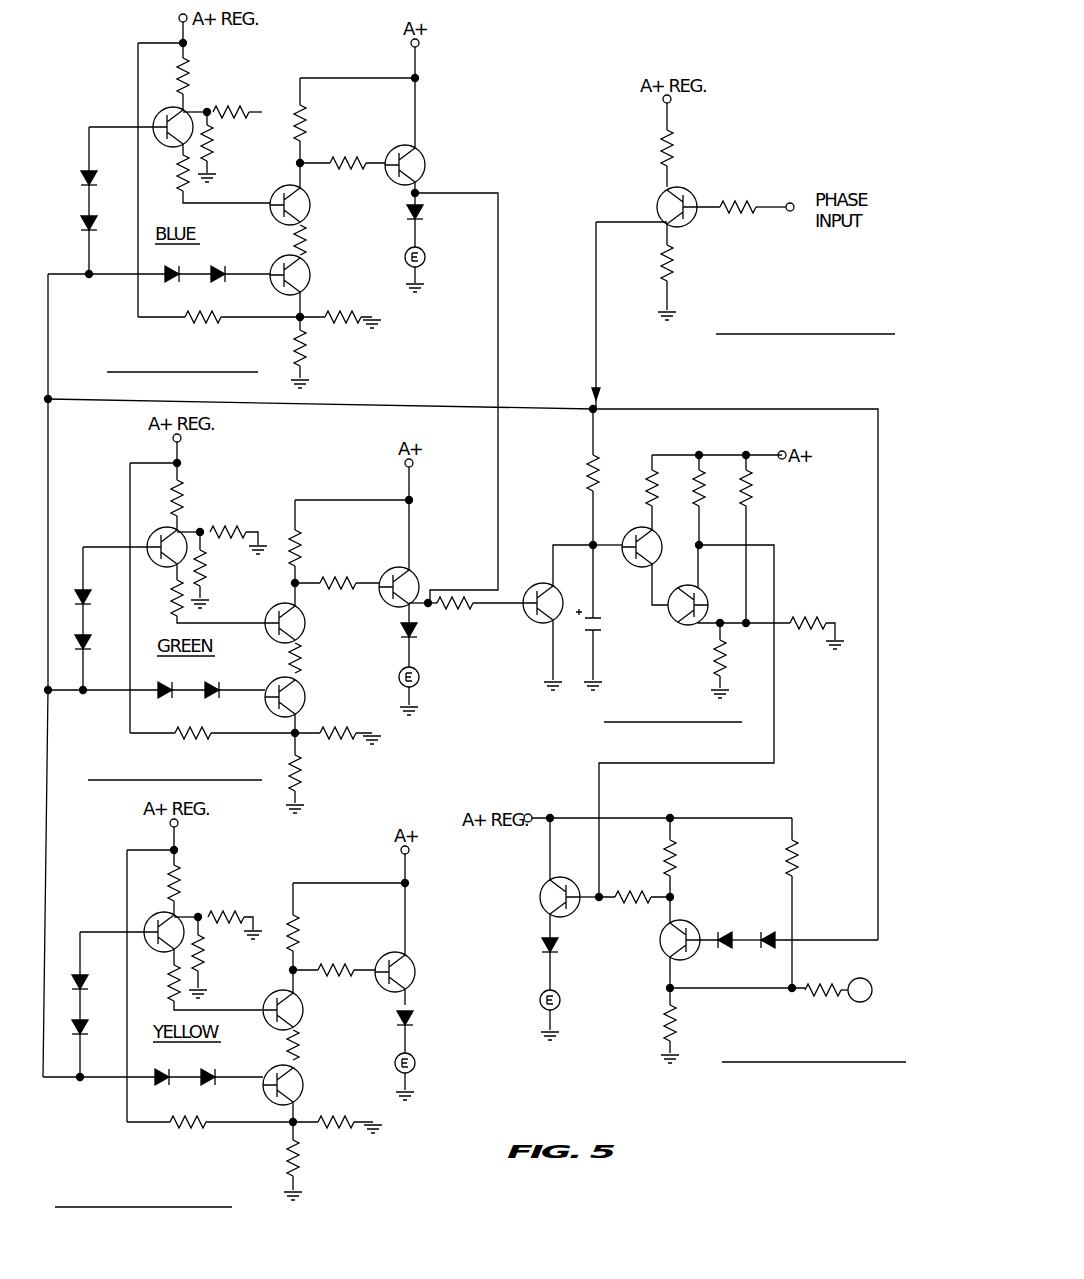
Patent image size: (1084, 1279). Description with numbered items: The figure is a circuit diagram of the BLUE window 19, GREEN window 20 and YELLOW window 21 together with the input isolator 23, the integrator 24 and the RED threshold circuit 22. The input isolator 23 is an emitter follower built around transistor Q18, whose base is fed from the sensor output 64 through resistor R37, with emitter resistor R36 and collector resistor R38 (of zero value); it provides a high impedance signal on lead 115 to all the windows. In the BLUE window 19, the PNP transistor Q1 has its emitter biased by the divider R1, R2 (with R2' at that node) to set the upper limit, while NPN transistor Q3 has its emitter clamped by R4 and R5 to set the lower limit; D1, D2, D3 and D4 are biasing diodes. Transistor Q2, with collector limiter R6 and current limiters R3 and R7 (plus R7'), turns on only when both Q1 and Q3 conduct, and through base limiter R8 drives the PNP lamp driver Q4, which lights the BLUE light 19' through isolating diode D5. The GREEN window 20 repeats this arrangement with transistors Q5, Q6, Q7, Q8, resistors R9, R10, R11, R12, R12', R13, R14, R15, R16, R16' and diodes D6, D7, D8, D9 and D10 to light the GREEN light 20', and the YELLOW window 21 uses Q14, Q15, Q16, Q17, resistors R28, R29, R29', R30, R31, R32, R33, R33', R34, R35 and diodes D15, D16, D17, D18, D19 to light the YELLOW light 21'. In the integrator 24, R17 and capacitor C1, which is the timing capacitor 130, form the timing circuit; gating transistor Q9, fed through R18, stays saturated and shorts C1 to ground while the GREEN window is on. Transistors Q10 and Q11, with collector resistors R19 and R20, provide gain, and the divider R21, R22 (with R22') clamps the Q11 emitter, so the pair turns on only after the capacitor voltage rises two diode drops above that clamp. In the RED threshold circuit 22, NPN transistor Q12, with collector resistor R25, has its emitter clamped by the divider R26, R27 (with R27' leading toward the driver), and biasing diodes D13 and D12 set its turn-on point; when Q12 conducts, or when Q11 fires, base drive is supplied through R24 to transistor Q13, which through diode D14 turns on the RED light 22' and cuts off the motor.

The BLUE window 19 is at (182, 361).
The GREEN window 20 is at (175, 769).
The YELLOW window 21 is at (143, 1196).
The RED threshold circuit 22 is at (814, 1051).
The input isolator 23 is at (805, 323).
The integrator 24 is at (673, 711).
The BLUE light 19' is at (441, 262).
The GREEN light 20' is at (435, 684).
The YELLOW light 21' is at (431, 1069).
The RED light 22' is at (559, 1015).
The sensor output 64 is at (775, 207).
The lead 115 is at (596, 358).
The timing capacitor 130 is at (570, 646).
The capacitor C1 is at (601, 617).
The resistor R1 is at (195, 84).
The resistor R2 is at (217, 147).
The resistor R2' is at (237, 99).
The current limiter resistor R3 is at (203, 173).
The resistor R4 is at (354, 120).
The resistor R5 is at (342, 162).
The collector current limiter R6 is at (323, 241).
The current limiter resistor R7 is at (219, 327).
The resistor R7' is at (340, 327).
The base current limiter R8 is at (310, 352).
The resistor R9 is at (349, 541).
The resistor R10 is at (337, 582).
The resistor R11 is at (318, 658).
The resistor R12 is at (212, 743).
The resistor R12' is at (338, 743).
The resistor R13 is at (310, 773).
The resistor R14 is at (196, 593).
The resistor R15 is at (219, 495).
The resistor R16 is at (216, 570).
The resistor R16' is at (238, 527).
The resistor R17 is at (576, 499).
The resistor R18 is at (480, 622).
The resistor R19 is at (654, 480).
The resistor R20 is at (715, 500).
The resistor R21 is at (736, 660).
The resistor R22 is at (763, 539).
The resistor R22' is at (814, 619).
The resistor R24 is at (634, 896).
The resistor R25 is at (688, 857).
The resistor R26 is at (686, 1025).
The resistor R27 is at (808, 903).
The resistor R27' is at (844, 992).
The resistor R28 is at (215, 879).
The resistor R29 is at (214, 957).
The resistor R29' is at (235, 913).
The resistor R30 is at (194, 979).
The resistor R31 is at (316, 1048).
The resistor R32 is at (272, 1161).
The resistor R33 is at (210, 1133).
The resistor R33' is at (337, 1133).
The resistor R34 is at (346, 926).
The resistor R35 is at (334, 969).
The resistor R36 is at (708, 282).
The resistor R37 is at (757, 195).
The resistor R38 is at (684, 158).
The PNP transistor Q1 is at (170, 112).
The NPN transistor Q2 is at (279, 217).
The NPN transistor Q3 is at (280, 262).
The PNP lamp driver transistor Q4 is at (431, 158).
The transistor Q5 is at (425, 582).
The transistor Q6 is at (275, 643).
The transistor Q7 is at (266, 713).
The transistor Q8 is at (166, 520).
The gating transistor Q9 is at (543, 634).
The transistor Q10 is at (654, 530).
The transistor Q11 is at (694, 592).
The NPN transistor Q12 is at (660, 948).
The RED threshold transistor Q13 is at (542, 891).
The transistor Q14 is at (162, 906).
The transistor Q15 is at (274, 1033).
The transistor Q16 is at (264, 1103).
The transistor Q17 is at (421, 966).
The transistor Q18 is at (692, 232).
The biasing diode D1 is at (101, 178).
The biasing diode D2 is at (101, 223).
The biasing diode D3 is at (216, 261).
The biasing diode D4 is at (169, 261).
The isolating diode D5 is at (428, 220).
The diode D6 is at (208, 678).
The diode D7 is at (161, 678).
The diode D8 is at (96, 597).
The diode D9 is at (96, 642).
The diode D10 is at (428, 635).
The biasing diode D12 is at (816, 928).
The biasing diode D13 is at (734, 928).
The diode D14 is at (530, 952).
The diode D15 is at (423, 1031).
The diode D16 is at (98, 983).
The diode D17 is at (98, 1028).
The diode D18 is at (211, 1065).
The diode D19 is at (163, 1065).